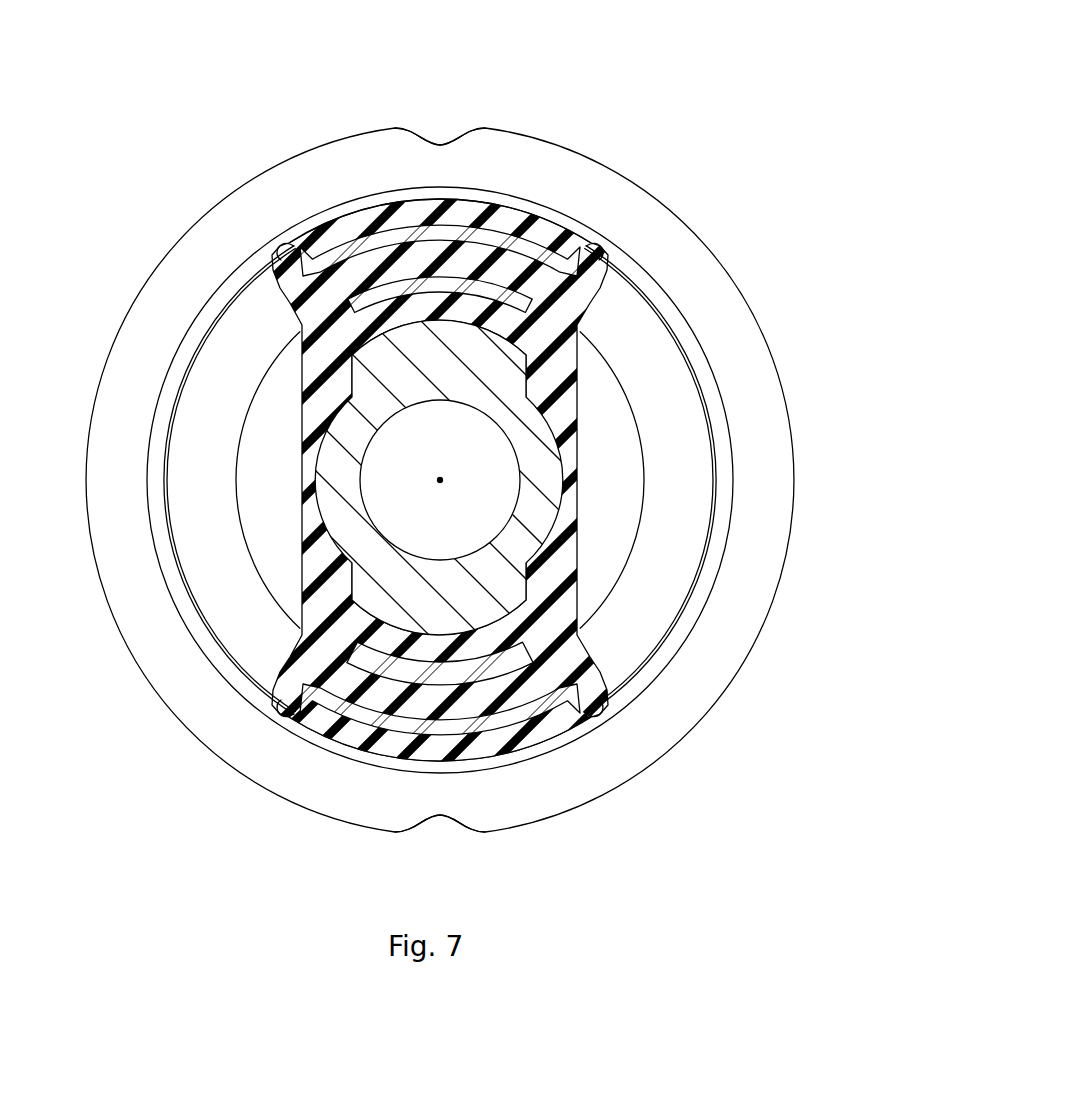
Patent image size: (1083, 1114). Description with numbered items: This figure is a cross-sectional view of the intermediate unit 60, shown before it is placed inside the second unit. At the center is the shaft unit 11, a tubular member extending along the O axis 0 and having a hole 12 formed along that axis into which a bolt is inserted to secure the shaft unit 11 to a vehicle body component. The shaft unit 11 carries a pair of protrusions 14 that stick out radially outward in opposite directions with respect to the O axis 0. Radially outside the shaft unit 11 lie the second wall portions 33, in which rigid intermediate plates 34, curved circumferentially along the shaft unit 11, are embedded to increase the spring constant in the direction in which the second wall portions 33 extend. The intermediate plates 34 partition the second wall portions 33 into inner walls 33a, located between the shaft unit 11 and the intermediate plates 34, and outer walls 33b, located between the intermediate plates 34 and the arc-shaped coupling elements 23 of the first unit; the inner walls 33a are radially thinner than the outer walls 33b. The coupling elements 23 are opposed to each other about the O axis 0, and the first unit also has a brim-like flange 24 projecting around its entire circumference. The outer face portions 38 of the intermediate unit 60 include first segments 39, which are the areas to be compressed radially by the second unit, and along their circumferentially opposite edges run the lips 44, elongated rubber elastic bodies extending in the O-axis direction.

The intermediate unit 60 is at (716, 107).
The outer face portions 38 is at (437, 160).
The first segments 39 is at (468, 208).
The coupling elements 23 is at (350, 247).
The lips 44 is at (290, 243).
The intermediate plates 34 is at (347, 300).
The protrusions 14 is at (510, 355).
The shaft unit 11 is at (547, 470).
The O axis 0 is at (442, 478).
The hole 12 is at (378, 527).
The second wall portions 33 is at (850, 620).
The inner walls 33a is at (487, 642).
The outer walls 33b is at (527, 682).
The flange 24 is at (148, 653).